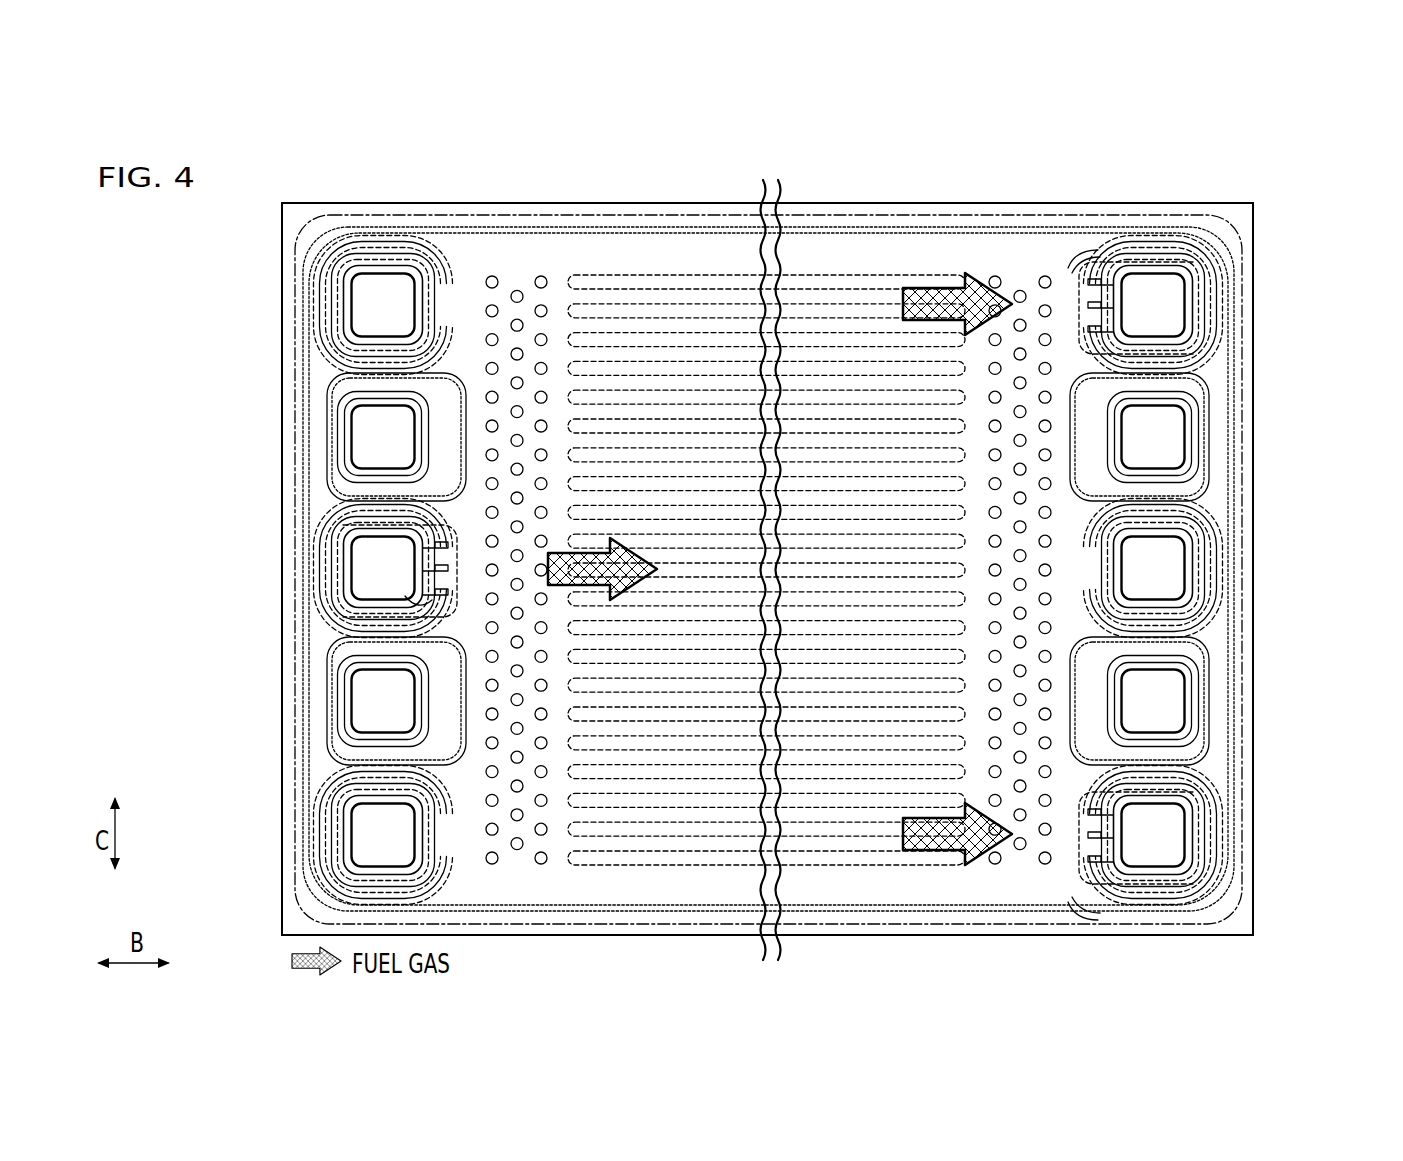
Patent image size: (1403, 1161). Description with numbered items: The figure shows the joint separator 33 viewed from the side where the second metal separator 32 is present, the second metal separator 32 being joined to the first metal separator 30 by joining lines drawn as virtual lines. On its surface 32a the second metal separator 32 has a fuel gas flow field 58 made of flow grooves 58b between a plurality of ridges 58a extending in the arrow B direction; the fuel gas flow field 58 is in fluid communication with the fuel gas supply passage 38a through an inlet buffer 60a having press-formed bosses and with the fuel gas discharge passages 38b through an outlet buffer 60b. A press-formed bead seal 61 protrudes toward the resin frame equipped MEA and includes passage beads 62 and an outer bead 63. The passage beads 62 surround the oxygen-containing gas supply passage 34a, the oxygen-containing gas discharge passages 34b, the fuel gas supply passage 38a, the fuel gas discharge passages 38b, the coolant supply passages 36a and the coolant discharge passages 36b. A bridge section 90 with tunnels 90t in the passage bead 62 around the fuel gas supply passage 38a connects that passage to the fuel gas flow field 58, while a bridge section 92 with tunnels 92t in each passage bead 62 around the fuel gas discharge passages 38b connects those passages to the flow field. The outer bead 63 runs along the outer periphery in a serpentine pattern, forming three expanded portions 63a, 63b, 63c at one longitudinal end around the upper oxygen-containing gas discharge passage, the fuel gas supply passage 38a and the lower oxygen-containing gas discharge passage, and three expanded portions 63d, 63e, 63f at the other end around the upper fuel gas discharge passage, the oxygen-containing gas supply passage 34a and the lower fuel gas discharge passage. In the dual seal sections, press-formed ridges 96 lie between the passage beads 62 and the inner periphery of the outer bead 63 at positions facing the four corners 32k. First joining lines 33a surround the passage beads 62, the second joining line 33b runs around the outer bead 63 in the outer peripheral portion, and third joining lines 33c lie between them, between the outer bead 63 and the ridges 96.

The first metal separator 30 is at (950, 201).
The second metal separator 32 is at (918, 201).
The surface 32a is at (823, 250).
The corner 32k is at (283, 203).
The joint separator 33 is at (154, 224).
The first joining line 33a is at (340, 381).
The second joining line 33b is at (513, 225).
The third joining line 33c is at (312, 330).
The oxygen-containing gas supply passage 34a is at (1170, 583).
The oxygen-containing gas discharge passage 34b is at (370, 303).
The coolant supply passage 36a is at (370, 456).
The coolant discharge passage 36b is at (1172, 446).
The fuel gas supply passage 38a is at (372, 547).
The fuel gas discharge passage 38b is at (1152, 283).
The fuel gas flow field 58 is at (765, 508).
The ridge 58a is at (622, 300).
The flow groove 58b is at (685, 297).
The inlet buffer 60a is at (517, 290).
The outlet buffer 60b is at (1018, 290).
The bead seal 61 is at (1303, 800).
The passage bead 62 is at (338, 263).
The outer bead 63 is at (1216, 842).
The expanded portion 63a is at (320, 336).
The expanded portion 63b is at (320, 600).
The expanded portion 63c is at (322, 866).
The expanded portion 63d is at (1220, 307).
The expanded portion 63e is at (1215, 525).
The expanded portion 63f is at (1218, 884).
The bridge section 90 is at (441, 527).
The tunnel 90t is at (416, 598).
The bridge section 92 is at (1097, 345).
The tunnel 92t is at (1078, 262).
The ridge 96 is at (385, 246).